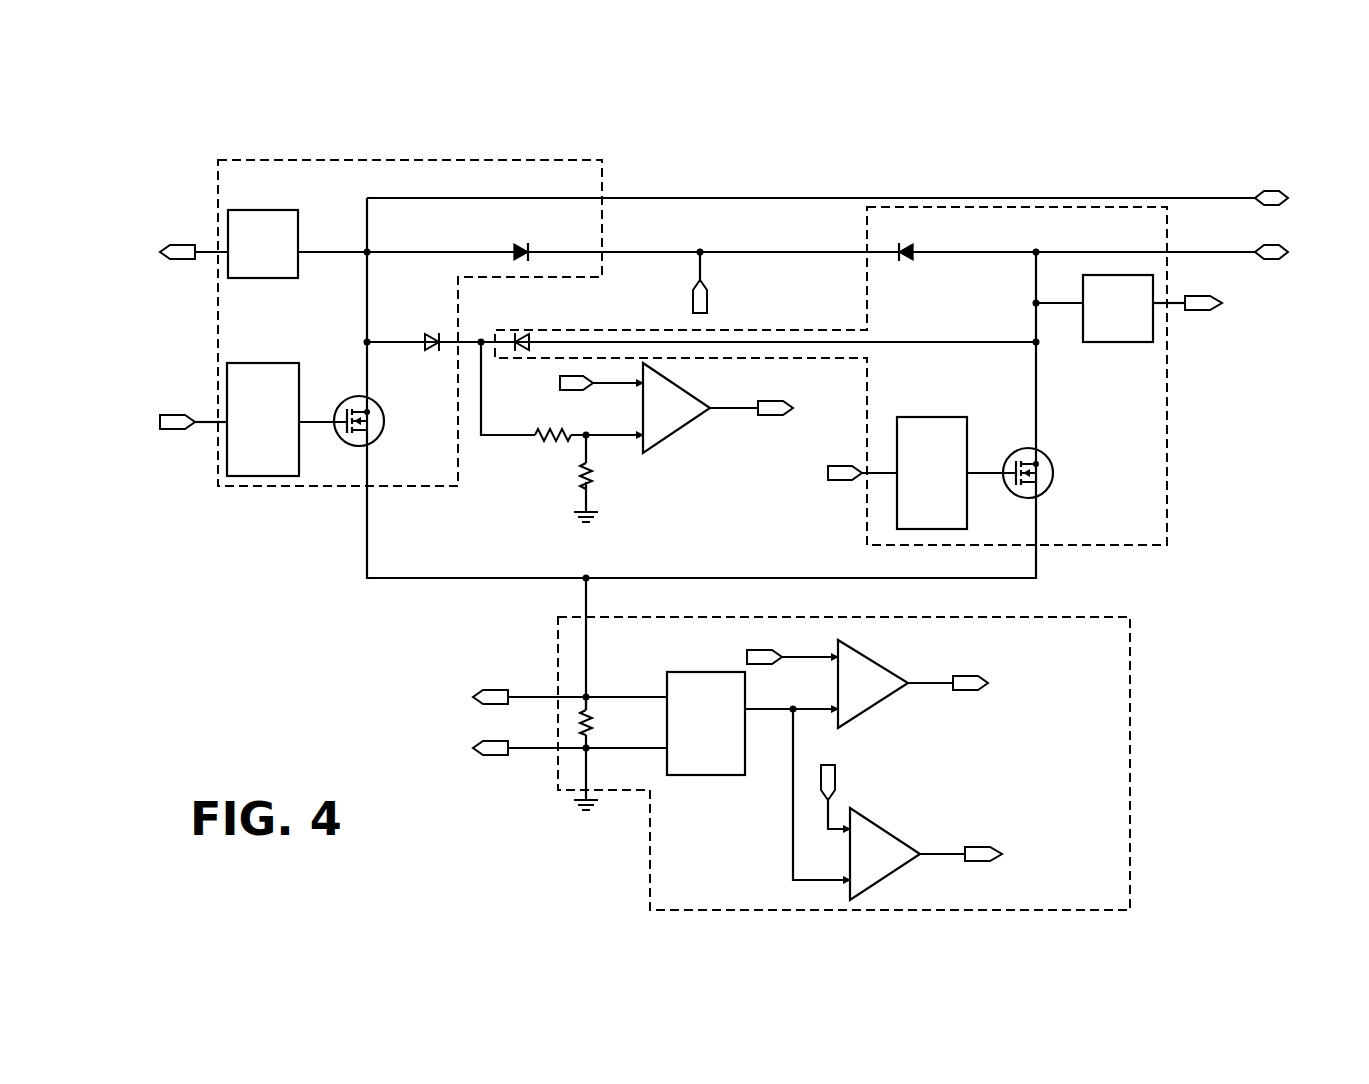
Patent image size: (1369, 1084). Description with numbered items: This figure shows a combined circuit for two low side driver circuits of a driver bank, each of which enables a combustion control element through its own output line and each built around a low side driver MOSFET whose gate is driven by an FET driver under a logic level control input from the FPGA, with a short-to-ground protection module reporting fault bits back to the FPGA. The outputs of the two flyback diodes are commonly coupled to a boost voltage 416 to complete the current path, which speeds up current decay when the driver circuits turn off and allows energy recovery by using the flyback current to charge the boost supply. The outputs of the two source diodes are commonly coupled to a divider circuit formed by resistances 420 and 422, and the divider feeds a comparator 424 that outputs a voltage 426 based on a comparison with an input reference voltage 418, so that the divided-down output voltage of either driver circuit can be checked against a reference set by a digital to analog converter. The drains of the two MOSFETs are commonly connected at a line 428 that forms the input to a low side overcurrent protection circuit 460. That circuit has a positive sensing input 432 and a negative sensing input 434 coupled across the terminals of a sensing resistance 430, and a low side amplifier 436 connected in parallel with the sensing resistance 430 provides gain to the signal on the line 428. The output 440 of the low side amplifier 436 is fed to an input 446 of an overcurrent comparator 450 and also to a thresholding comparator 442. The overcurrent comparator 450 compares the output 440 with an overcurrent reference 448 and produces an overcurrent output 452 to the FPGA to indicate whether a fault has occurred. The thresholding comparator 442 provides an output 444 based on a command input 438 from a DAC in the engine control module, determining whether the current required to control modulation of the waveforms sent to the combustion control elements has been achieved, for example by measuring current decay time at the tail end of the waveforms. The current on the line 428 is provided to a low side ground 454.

The boost voltage 416 is at (703, 290).
The input reference voltage 418 is at (560, 383).
The resistance 420 is at (543, 434).
The resistance 422 is at (596, 481).
The comparator 424 is at (668, 446).
The voltage 426 is at (785, 415).
The line 428 is at (588, 590).
The sensing resistance 430 is at (598, 727).
The positive sensing input 432 is at (510, 701).
The negative sensing input 434 is at (510, 745).
The low side amplifier 436 is at (700, 776).
The command input 438 is at (790, 655).
The output 440 is at (768, 707).
The thresholding comparator 442 is at (870, 652).
The output 444 is at (928, 682).
The input 446 is at (798, 878).
The overcurrent reference 448 is at (836, 783).
The overcurrent comparator 450 is at (880, 823).
The overcurrent output 452 is at (943, 852).
The low side ground 454 is at (572, 812).
The low side overcurrent protection circuit 460 is at (1131, 823).